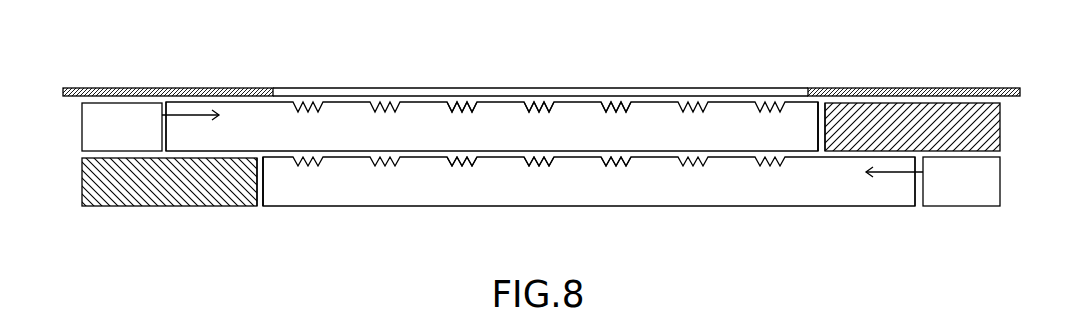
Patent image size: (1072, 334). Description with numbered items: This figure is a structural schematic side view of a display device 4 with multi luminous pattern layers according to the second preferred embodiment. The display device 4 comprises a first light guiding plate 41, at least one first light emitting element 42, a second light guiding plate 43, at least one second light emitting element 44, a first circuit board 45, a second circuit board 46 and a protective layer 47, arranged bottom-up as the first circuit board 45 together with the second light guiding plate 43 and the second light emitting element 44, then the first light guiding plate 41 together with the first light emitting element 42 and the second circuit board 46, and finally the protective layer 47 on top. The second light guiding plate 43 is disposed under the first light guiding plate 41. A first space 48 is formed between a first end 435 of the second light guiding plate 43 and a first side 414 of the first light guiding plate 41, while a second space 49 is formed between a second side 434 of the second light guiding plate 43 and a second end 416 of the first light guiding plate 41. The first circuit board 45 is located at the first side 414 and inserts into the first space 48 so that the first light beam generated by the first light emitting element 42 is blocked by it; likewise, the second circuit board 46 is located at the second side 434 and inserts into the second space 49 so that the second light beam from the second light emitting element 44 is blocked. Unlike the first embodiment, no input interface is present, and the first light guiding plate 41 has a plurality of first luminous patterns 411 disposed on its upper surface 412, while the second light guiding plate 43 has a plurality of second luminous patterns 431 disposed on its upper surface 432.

The display device with multi luminous pattern layers 4 is at (945, 26).
The first light guiding plate 41 is at (425, 117).
The first luminous patterns 411 is at (468, 103).
The upper surface of the first light guiding plate 412 is at (657, 103).
The first side of the first light guiding plate 414 is at (222, 139).
The second end of the first light guiding plate 416 is at (817, 116).
The first light emitting element 42 is at (93, 137).
The second light guiding plate 43 is at (812, 189).
The second luminous patterns 431 is at (472, 163).
The upper surface of the second light guiding plate 432 is at (653, 160).
The second side of the second light guiding plate 434 is at (878, 195).
The first end of the second light guiding plate 435 is at (264, 183).
The second light emitting element 44 is at (991, 190).
The first circuit board 45 is at (93, 178).
The second circuit board 46 is at (990, 135).
The protective layer 47 is at (302, 91).
The first space 48 is at (258, 205).
The second space 49 is at (822, 117).